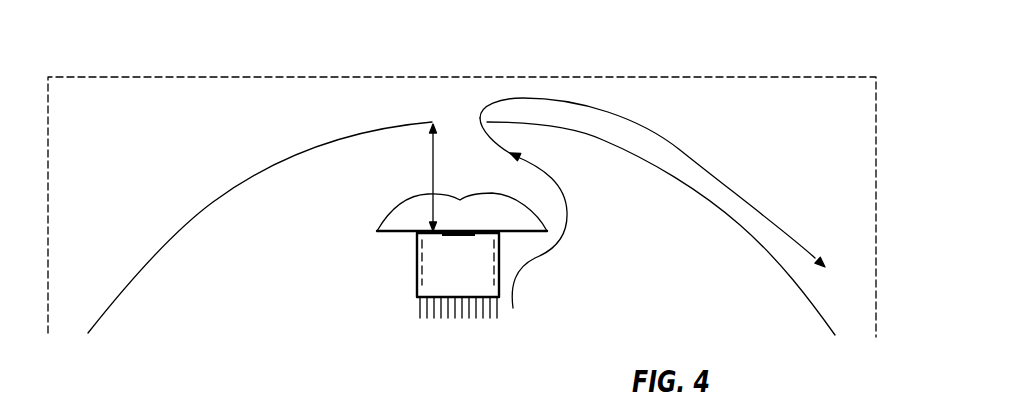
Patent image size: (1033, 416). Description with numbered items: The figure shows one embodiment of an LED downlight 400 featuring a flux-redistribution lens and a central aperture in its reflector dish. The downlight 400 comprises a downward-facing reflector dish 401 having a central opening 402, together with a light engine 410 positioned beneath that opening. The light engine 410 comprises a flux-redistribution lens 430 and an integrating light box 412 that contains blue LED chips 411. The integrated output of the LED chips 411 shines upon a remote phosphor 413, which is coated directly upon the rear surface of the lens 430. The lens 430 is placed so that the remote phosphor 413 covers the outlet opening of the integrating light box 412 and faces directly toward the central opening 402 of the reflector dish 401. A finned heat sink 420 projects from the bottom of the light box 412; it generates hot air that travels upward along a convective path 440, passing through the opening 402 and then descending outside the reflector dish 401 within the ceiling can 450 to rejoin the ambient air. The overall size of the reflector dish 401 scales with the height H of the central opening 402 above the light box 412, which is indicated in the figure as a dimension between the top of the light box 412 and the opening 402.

The LED downlight 400 is at (777, 155).
The reflector dish 401 is at (163, 232).
The central opening 402 is at (452, 124).
The light engine 410 is at (622, 265).
The blue LED chips 411 is at (410, 255).
The integrating light box 412 is at (413, 245).
The remote phosphor 413 is at (453, 244).
The finned heat sink 420 is at (452, 325).
The flux-redistribution lens 430 is at (393, 207).
The convective path 440 is at (567, 190).
The ceiling can 450 is at (150, 73).
The height of central opening H is at (445, 177).